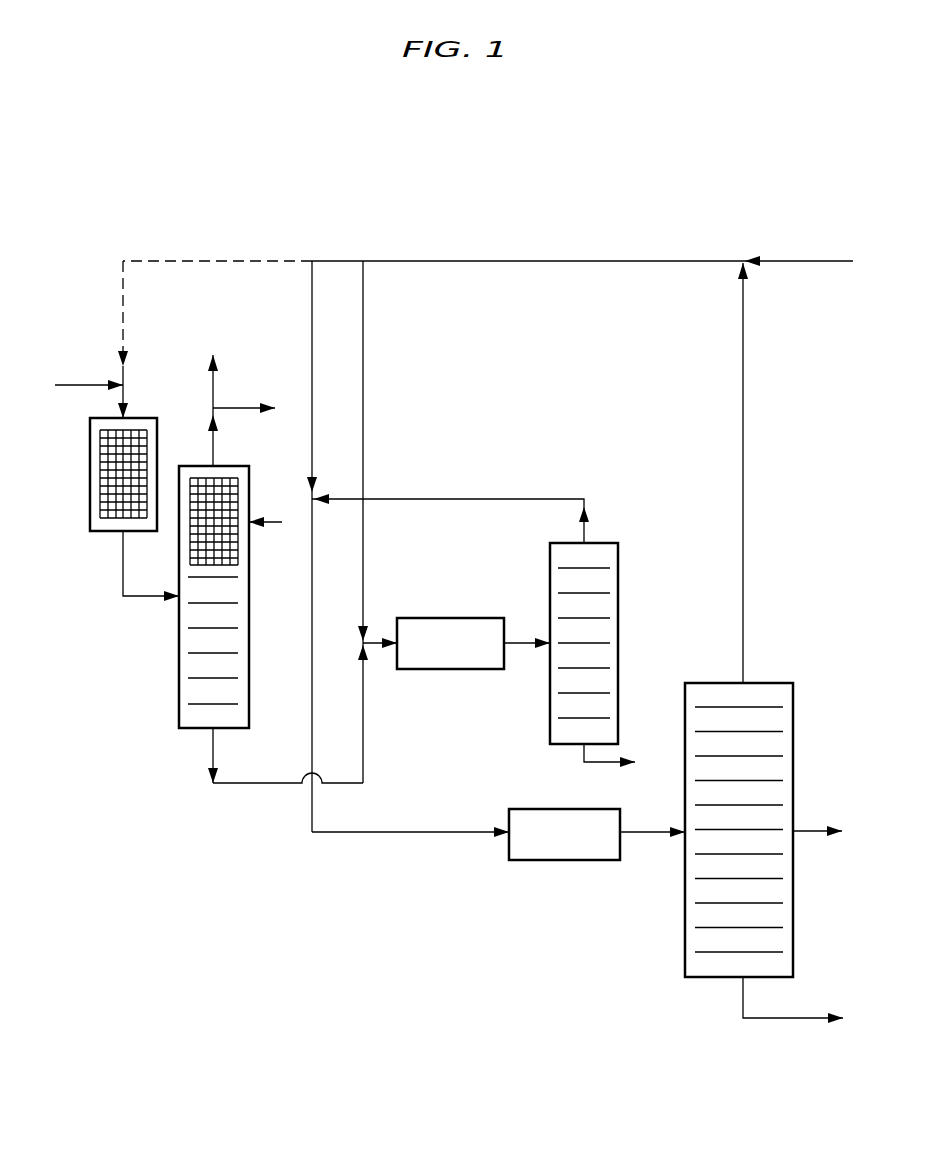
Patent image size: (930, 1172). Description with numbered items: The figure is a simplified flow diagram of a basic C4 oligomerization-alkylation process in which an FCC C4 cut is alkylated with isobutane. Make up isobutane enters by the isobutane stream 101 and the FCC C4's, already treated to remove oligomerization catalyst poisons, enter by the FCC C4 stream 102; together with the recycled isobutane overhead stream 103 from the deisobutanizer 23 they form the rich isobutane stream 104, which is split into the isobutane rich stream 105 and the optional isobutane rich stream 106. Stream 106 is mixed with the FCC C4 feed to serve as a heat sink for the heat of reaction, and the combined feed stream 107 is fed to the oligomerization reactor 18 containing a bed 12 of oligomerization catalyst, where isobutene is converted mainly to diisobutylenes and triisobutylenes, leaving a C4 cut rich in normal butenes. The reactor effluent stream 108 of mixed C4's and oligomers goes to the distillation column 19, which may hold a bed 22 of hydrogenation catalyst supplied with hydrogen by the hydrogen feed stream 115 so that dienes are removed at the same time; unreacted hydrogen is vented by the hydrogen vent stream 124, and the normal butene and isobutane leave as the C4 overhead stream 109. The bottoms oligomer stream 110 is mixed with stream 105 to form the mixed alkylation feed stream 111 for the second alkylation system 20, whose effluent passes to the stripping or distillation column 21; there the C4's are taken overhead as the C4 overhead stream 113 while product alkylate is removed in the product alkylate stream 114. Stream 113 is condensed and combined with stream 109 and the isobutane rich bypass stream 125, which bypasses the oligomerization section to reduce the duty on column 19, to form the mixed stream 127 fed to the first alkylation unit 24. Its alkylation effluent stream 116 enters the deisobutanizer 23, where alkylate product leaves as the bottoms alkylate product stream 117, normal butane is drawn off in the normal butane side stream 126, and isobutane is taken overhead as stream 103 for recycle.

The bed of oligomerization catalyst 12 is at (112, 460).
The oligomerization reactor 18 is at (103, 418).
The distillation column 19 is at (203, 466).
The second alkylation system 20 is at (473, 643).
The stripping or distillation column 21 is at (565, 543).
The bed of hydrogenation catalyst 22 is at (232, 496).
The deisobutanizer 23 is at (712, 683).
The first alkylation unit 24 is at (564, 834).
The isobutane stream 101 is at (775, 261).
The FCC C4 stream 102 is at (98, 385).
The isobutane overhead stream 103 is at (743, 375).
The rich isobutane stream 104 is at (463, 261).
The isobutane rich stream 105 is at (363, 340).
The optional isobutane rich stream 106 is at (157, 261).
The combined feed stream 107 is at (125, 393).
The reactor effluent stream 108 is at (158, 603).
The C4 overhead stream 109 is at (230, 408).
The bottoms oligomer stream 110 is at (290, 783).
The mixed alkylation feed stream 111 is at (372, 652).
The C4 overhead stream 113 is at (448, 499).
The product alkylate stream 114 is at (584, 762).
The hydrogen feed stream 115 is at (292, 538).
The alkylation effluent stream 116 is at (640, 834).
The alkylate product stream 117 is at (740, 998).
The hydrogen vent stream 124 is at (213, 378).
The isobutane rich bypass stream 125 is at (312, 327).
The normal butane side stream 126 is at (805, 831).
The mixed stream 127 is at (438, 832).